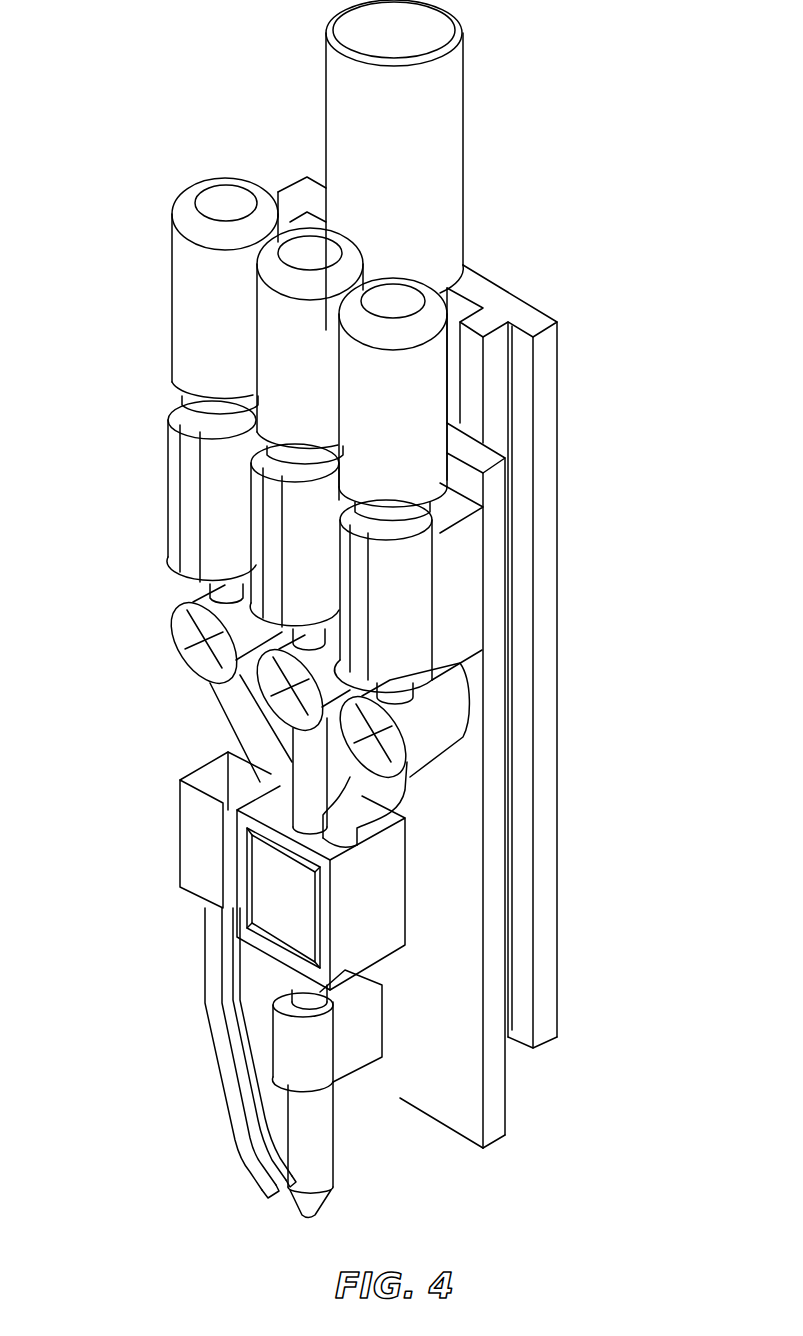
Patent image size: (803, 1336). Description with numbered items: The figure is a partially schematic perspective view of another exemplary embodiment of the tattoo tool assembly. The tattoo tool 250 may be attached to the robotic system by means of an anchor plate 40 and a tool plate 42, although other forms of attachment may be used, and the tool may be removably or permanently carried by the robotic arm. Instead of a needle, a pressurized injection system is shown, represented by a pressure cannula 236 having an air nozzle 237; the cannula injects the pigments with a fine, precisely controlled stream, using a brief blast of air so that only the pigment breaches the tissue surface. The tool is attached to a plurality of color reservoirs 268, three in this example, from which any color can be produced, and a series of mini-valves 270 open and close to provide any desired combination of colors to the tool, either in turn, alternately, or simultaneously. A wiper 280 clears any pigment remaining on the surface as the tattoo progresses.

The anchor plate 40 is at (563, 812).
The tool plate 42 is at (508, 1082).
The pressure cannula 236 is at (317, 1137).
The air nozzle 237 is at (308, 1218).
The tattoo tool 250 is at (147, 720).
The color reservoirs 268 is at (345, 408).
The mini-valves 270 is at (215, 615).
The wiper 280 is at (227, 1132).